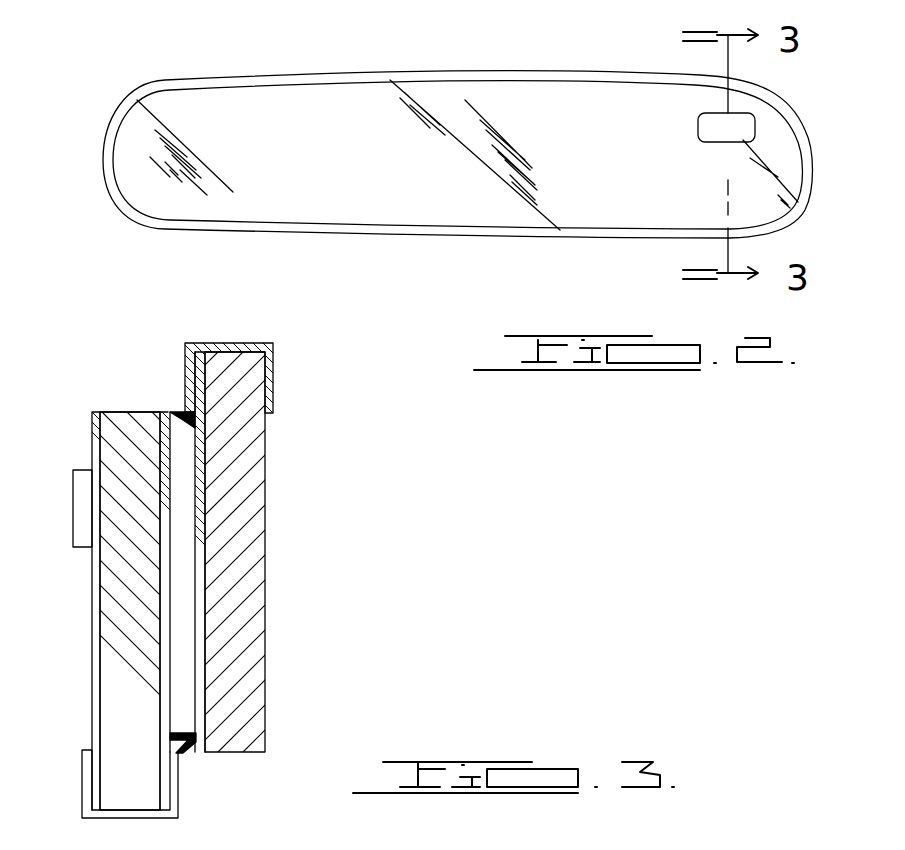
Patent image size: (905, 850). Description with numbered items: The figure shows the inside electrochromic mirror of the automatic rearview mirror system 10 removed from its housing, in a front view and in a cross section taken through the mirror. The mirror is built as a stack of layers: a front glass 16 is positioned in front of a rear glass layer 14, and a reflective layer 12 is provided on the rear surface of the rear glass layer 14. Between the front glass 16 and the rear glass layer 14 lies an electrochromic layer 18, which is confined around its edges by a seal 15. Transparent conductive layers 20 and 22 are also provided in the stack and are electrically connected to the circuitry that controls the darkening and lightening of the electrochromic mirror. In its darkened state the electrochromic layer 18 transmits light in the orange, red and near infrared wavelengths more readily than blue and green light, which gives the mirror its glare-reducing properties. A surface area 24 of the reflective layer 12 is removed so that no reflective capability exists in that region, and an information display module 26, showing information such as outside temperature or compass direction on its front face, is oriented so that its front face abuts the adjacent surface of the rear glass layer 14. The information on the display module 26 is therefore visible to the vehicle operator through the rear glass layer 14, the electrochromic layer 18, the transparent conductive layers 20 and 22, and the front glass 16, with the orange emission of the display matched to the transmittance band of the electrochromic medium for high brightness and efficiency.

In FIG. 2, the automatic rearview mirror system 10 is at (558, 68).
In FIG. 3, the automatic rearview mirror system 10 is at (238, 338).
In FIG. 3, the reflective layer 12 is at (92, 412).
In FIG. 3, the rear glass layer 14 is at (134, 422).
In FIG. 3, the seal 15 is at (190, 755).
In FIG. 2, the front glass 16 is at (590, 208).
In FIG. 3, the front glass 16 is at (264, 510).
In FIG. 3, the electrochromic layer 18 is at (188, 597).
In FIG. 3, the transparent conductive layer 20 is at (155, 703).
In FIG. 3, the transparent conductive layer 22 is at (206, 665).
In FIG. 3, the surface area 24 is at (97, 483).
In FIG. 2, the information display module 26 is at (753, 125).
In FIG. 3, the information display module 26 is at (82, 525).